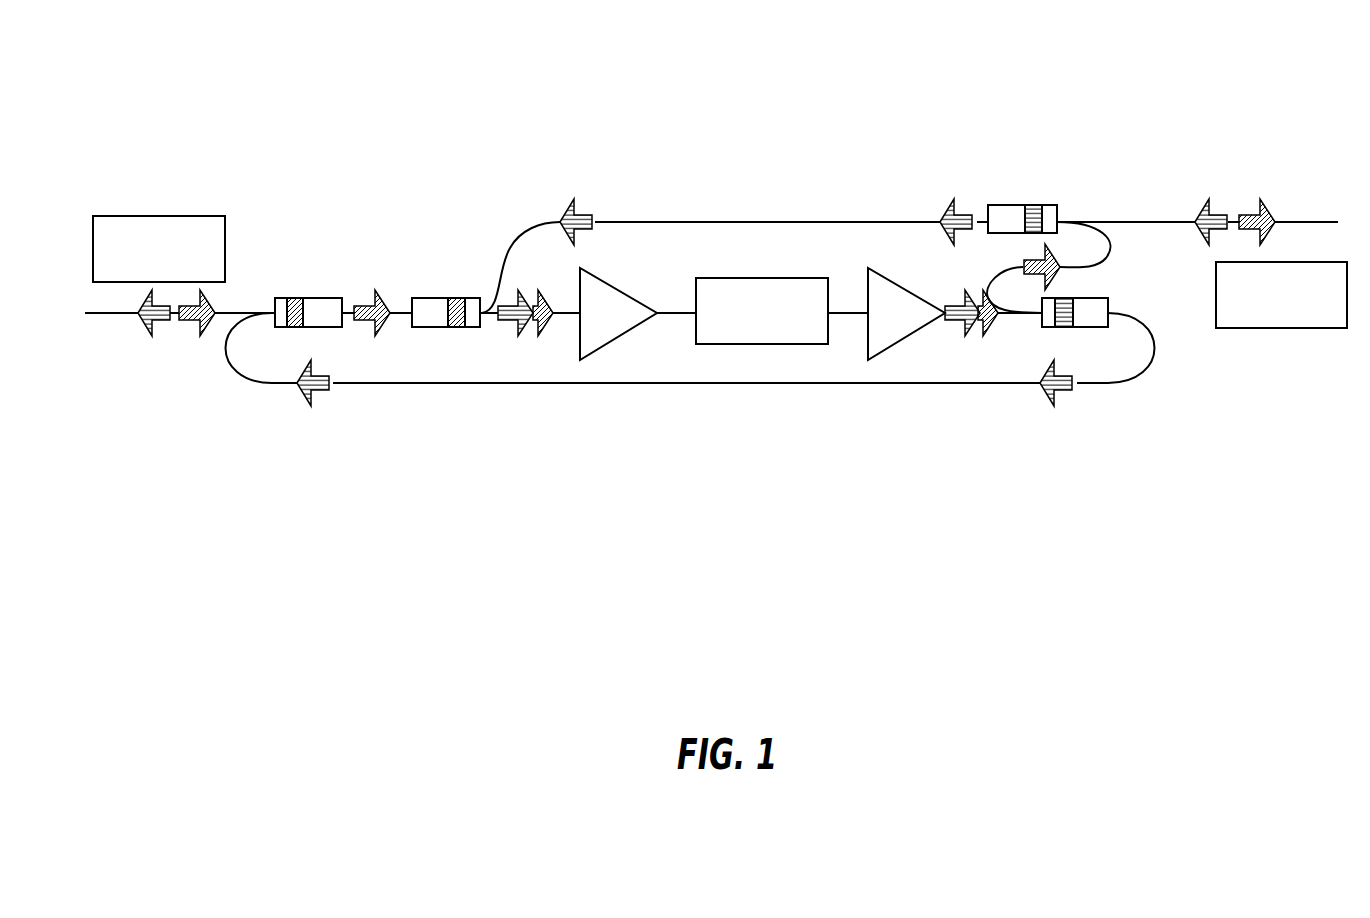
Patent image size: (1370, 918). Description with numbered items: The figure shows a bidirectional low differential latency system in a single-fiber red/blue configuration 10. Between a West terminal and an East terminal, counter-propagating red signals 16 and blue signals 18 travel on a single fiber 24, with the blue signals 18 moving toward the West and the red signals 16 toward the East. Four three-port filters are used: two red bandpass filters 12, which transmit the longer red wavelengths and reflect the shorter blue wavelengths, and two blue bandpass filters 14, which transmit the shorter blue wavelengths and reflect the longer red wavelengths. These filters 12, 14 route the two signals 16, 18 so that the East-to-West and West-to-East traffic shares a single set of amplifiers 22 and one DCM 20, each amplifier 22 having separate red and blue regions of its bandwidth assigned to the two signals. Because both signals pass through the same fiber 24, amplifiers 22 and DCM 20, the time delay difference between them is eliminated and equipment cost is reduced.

The single-fiber red/blue configuration 10 is at (727, 110).
The red bandpass filter 12 is at (323, 297).
The blue bandpass filter 14 is at (1017, 205).
The red signal 16 is at (190, 337).
The blue signal 18 is at (138, 335).
The DCM 20 is at (735, 345).
The amplifier 22 is at (598, 360).
The single fiber 24 is at (684, 312).